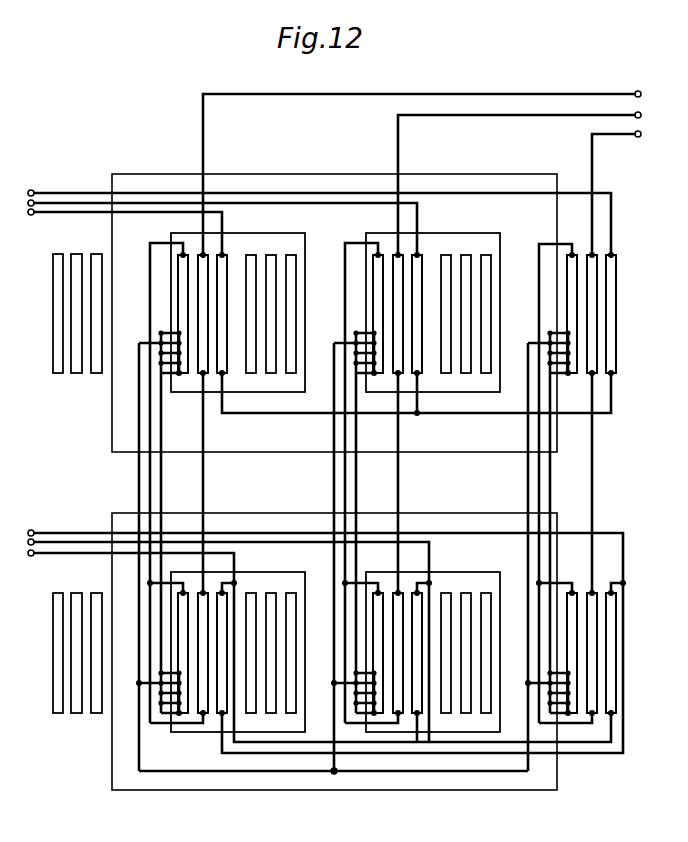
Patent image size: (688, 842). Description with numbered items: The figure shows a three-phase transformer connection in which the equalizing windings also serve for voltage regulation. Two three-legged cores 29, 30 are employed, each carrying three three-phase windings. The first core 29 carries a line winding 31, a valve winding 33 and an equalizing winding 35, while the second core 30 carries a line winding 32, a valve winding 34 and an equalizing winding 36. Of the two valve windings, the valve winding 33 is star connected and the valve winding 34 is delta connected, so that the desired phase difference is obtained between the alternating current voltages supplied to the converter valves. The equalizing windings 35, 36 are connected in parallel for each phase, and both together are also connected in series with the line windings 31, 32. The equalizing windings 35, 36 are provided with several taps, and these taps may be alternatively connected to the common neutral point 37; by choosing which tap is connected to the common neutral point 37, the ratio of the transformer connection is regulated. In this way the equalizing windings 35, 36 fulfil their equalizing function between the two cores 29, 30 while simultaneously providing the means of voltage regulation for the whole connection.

The three-legged core 29 is at (302, 188).
The three-legged core 30 is at (278, 523).
The line winding 31 is at (202, 269).
The line winding 32 is at (203, 608).
The valve winding 33 is at (222, 270).
The valve winding 34 is at (222, 605).
The equalizing winding 35 is at (185, 295).
The equalizing winding 36 is at (185, 634).
The common neutral point 37 is at (329, 775).